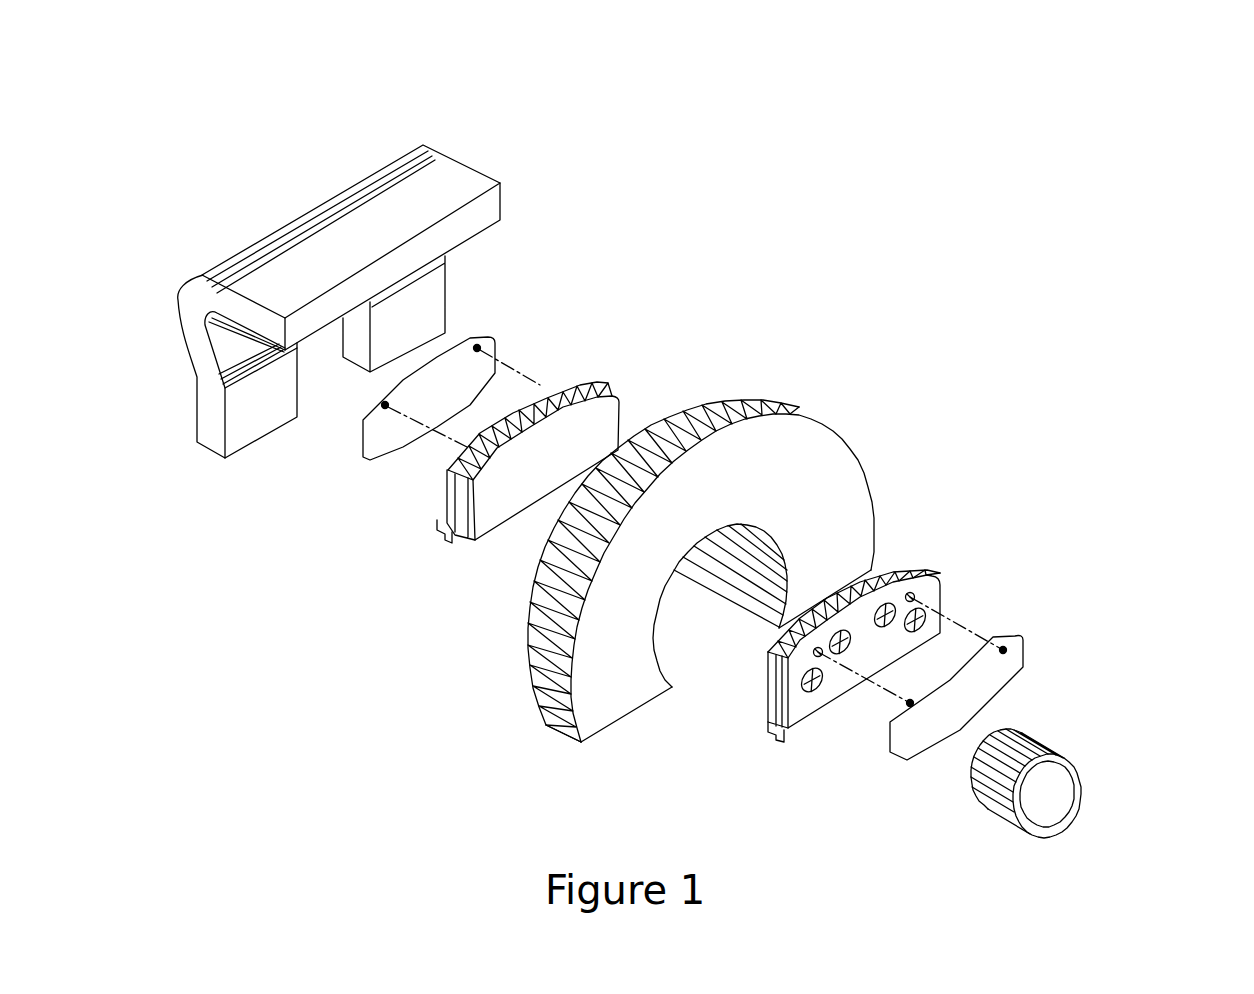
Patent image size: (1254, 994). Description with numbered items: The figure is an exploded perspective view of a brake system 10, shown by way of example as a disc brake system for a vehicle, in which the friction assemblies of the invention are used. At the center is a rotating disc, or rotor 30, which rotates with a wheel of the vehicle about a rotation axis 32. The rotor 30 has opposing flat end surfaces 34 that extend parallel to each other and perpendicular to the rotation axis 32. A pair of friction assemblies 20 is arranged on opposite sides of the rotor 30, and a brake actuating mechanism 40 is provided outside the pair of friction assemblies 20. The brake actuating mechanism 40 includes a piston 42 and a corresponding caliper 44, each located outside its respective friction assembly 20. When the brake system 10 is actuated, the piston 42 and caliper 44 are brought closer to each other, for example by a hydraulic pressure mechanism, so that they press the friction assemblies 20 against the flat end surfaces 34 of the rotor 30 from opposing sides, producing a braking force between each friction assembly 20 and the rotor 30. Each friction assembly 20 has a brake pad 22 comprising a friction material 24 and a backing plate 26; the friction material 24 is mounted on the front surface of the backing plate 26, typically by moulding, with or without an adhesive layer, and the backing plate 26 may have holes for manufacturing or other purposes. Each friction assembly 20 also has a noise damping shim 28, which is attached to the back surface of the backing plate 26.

The brake system 10 is at (815, 184).
The friction assembly 20 is at (744, 481).
The brake pad 22 is at (741, 499).
The friction material 24 is at (610, 385).
The backing plate 26 is at (600, 390).
The noise damping shim 28 is at (492, 330).
The rotor 30 is at (648, 550).
The rotation axis 32 is at (723, 610).
The flat end surfaces 34 is at (535, 634).
The brake actuating mechanism 40 is at (1094, 721).
The piston 42 is at (1042, 728).
The caliper 44 is at (437, 143).